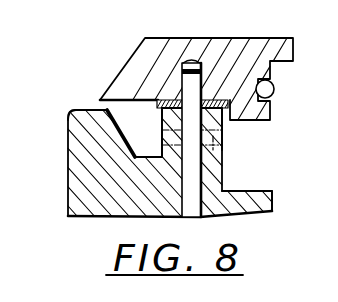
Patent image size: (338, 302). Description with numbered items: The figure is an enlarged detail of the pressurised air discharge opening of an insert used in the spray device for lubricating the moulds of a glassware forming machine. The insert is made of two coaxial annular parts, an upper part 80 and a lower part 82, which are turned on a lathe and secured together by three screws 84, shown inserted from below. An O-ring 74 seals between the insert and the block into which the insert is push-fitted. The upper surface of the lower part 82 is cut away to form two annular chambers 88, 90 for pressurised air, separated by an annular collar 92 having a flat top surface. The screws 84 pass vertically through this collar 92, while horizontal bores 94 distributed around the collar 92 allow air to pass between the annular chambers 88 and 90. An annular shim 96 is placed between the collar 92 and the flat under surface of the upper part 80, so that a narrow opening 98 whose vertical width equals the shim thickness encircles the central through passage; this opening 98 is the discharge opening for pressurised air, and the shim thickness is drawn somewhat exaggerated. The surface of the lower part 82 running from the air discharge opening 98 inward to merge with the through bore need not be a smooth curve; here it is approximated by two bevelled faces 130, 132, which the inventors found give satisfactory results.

The O-ring 74 is at (271, 98).
The upper part 80 is at (177, 47).
The lower part 82 is at (72, 177).
The screw 84 is at (192, 201).
The annular chamber 88 is at (239, 213).
The annular chamber 90 is at (150, 127).
The annular collar 92 is at (168, 117).
The horizontal bore 94 is at (258, 192).
The annular shim 96 is at (143, 105).
The air discharge opening 98 is at (99, 102).
The bevelled face 130 is at (96, 109).
The bevelled face 132 is at (68, 119).